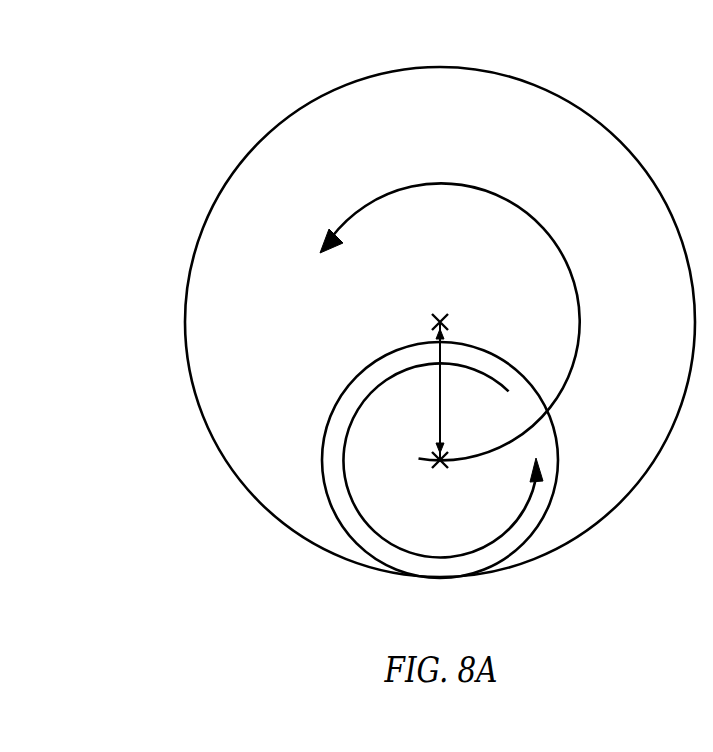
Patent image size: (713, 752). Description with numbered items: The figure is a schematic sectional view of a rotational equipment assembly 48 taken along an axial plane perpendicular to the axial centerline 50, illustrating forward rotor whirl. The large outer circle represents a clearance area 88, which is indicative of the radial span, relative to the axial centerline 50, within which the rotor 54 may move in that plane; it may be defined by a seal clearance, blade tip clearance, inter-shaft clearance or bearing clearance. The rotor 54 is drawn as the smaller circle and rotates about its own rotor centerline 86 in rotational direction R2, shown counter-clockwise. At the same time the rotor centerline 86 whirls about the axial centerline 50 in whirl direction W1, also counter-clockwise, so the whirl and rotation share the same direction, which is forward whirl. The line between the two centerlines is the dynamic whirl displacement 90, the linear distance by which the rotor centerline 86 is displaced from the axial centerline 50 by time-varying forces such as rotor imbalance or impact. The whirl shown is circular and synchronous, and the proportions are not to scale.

The rotational equipment assembly 48 is at (222, 125).
The clearance area 88 is at (537, 84).
The axial centerline 50 is at (440, 313).
The rotor 54 is at (388, 518).
The rotor centerline 86 is at (440, 470).
The dynamic whirl displacement 90 is at (440, 393).
The whirl direction W1 is at (440, 183).
The rotational direction R2 is at (523, 512).